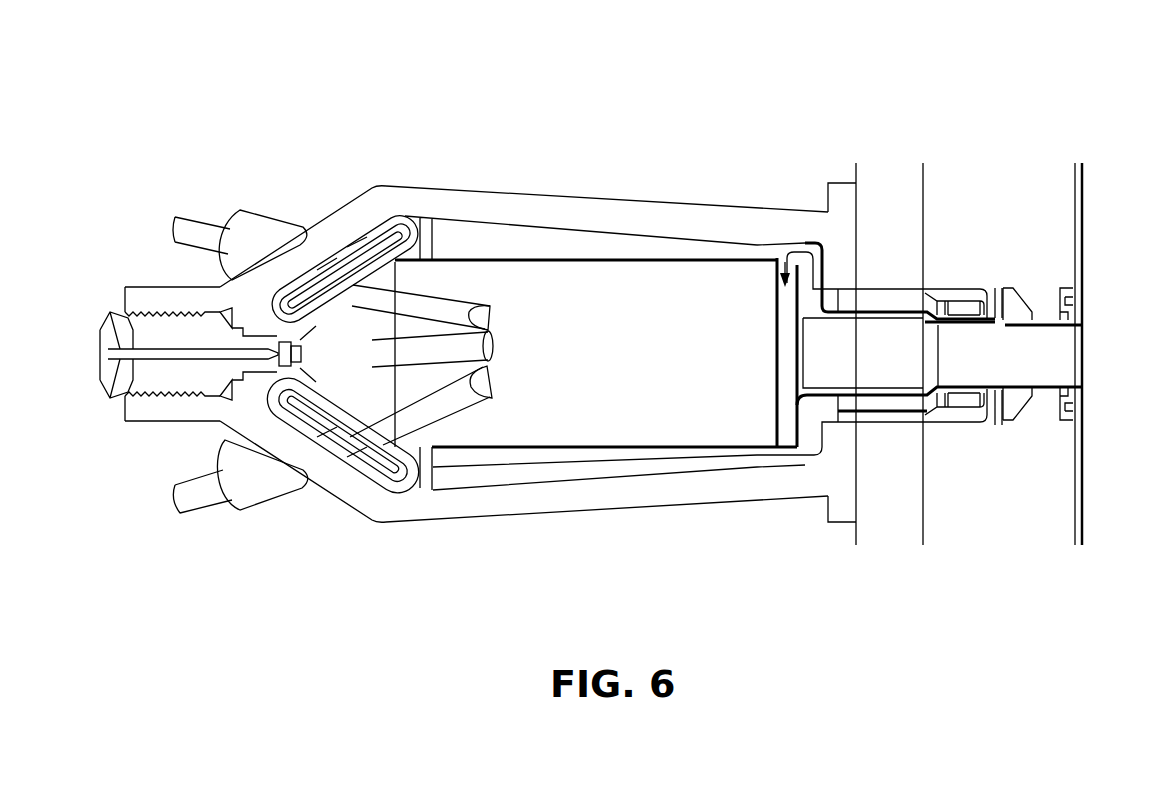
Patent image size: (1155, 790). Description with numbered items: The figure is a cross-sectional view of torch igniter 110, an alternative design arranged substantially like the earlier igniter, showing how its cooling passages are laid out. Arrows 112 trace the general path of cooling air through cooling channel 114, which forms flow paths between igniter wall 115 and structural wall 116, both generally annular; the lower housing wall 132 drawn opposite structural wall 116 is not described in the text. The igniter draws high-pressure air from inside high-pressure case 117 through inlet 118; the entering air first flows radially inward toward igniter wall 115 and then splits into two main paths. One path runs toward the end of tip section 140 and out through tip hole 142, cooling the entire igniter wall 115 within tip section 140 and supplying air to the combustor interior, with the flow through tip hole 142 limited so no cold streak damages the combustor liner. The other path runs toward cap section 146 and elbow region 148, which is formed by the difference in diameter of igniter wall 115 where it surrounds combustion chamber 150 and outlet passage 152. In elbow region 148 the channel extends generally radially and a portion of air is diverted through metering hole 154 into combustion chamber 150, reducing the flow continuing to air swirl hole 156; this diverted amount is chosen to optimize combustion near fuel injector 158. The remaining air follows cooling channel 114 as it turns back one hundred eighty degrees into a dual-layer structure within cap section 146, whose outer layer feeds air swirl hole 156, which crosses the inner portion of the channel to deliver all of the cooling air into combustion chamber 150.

The torch igniter 110 is at (686, 100).
The arrows 112 is at (981, 335).
The cooling channel 114 is at (660, 236).
The igniter wall 115 is at (598, 265).
The structural wall 116 is at (557, 176).
The high-pressure case 117 is at (903, 459).
The inlet 118 is at (994, 268).
The lower housing wall 132 is at (655, 525).
The tip section 140 is at (962, 450).
The tip hole 142 is at (1086, 325).
The cap section 146 is at (332, 177).
The elbow region 148 is at (844, 215).
The combustion chamber 150 is at (645, 419).
The outlet passage 152 is at (1044, 359).
The metering hole 154 is at (780, 280).
The air swirl hole 156 is at (415, 445).
The fuel injector 158 is at (181, 320).